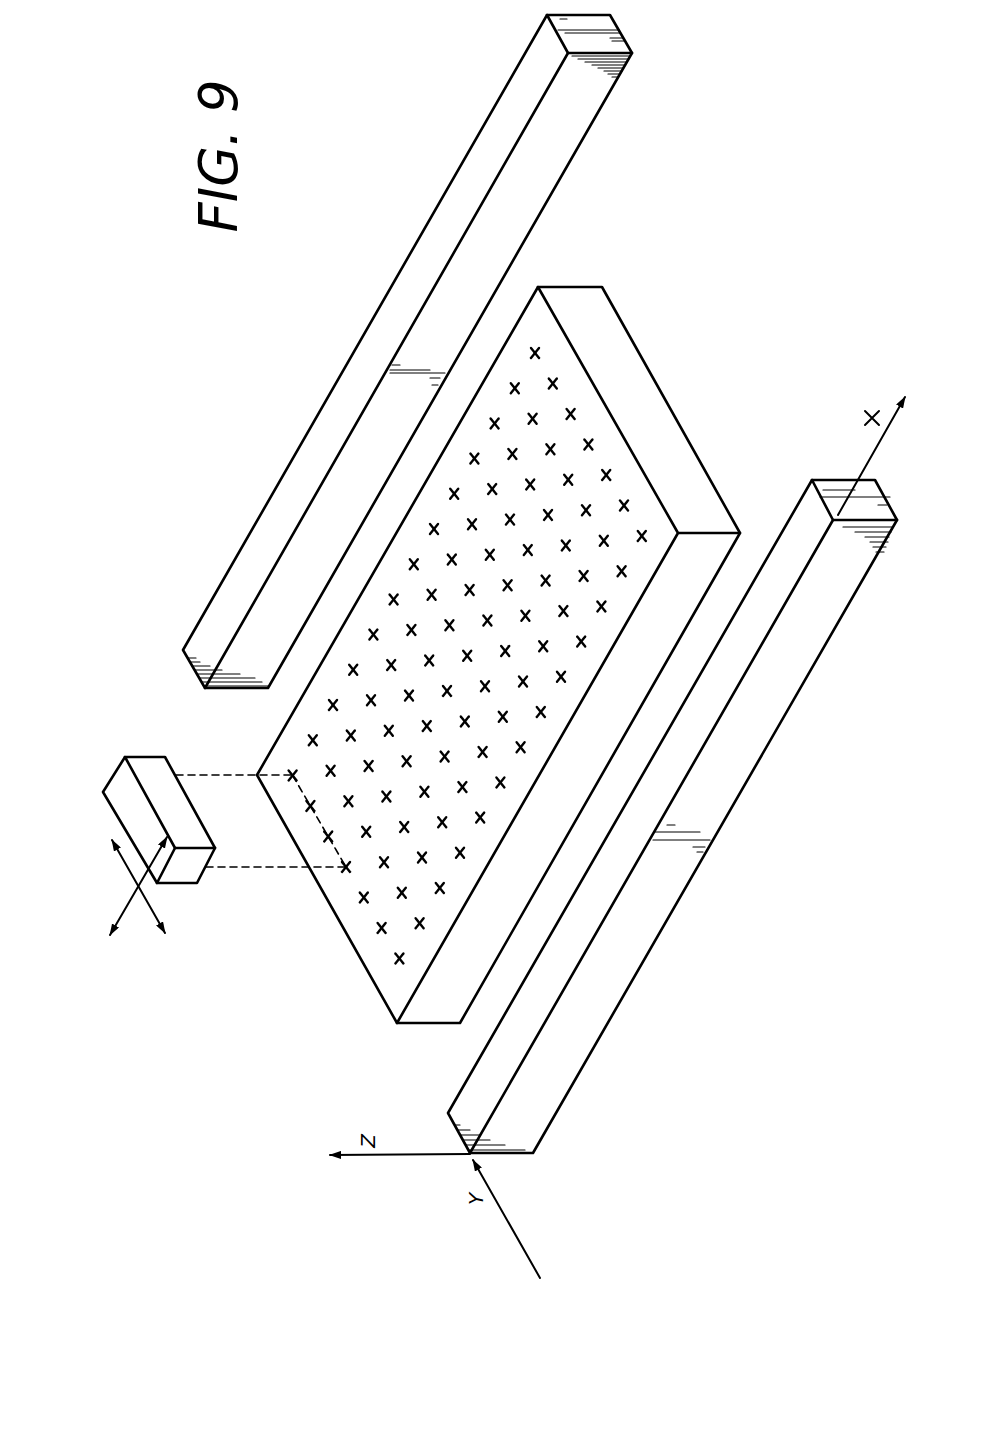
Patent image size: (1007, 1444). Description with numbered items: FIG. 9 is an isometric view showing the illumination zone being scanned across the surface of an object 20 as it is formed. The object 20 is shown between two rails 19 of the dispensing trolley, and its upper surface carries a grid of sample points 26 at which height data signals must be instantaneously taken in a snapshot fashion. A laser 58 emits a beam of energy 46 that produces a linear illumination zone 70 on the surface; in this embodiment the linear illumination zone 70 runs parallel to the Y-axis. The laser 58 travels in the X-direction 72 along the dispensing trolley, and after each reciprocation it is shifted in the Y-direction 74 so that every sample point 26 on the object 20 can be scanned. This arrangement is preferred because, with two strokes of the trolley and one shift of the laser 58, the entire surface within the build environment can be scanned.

The guide rail 19 is at (543, 1075).
The object 20 is at (557, 790).
The sample points 26 is at (359, 899).
The beam of energy 46 is at (253, 868).
The laser 58 is at (125, 782).
The linear illumination zone 70 is at (318, 820).
The X-direction travel 72 is at (127, 905).
The Y-direction shift 74 is at (127, 870).